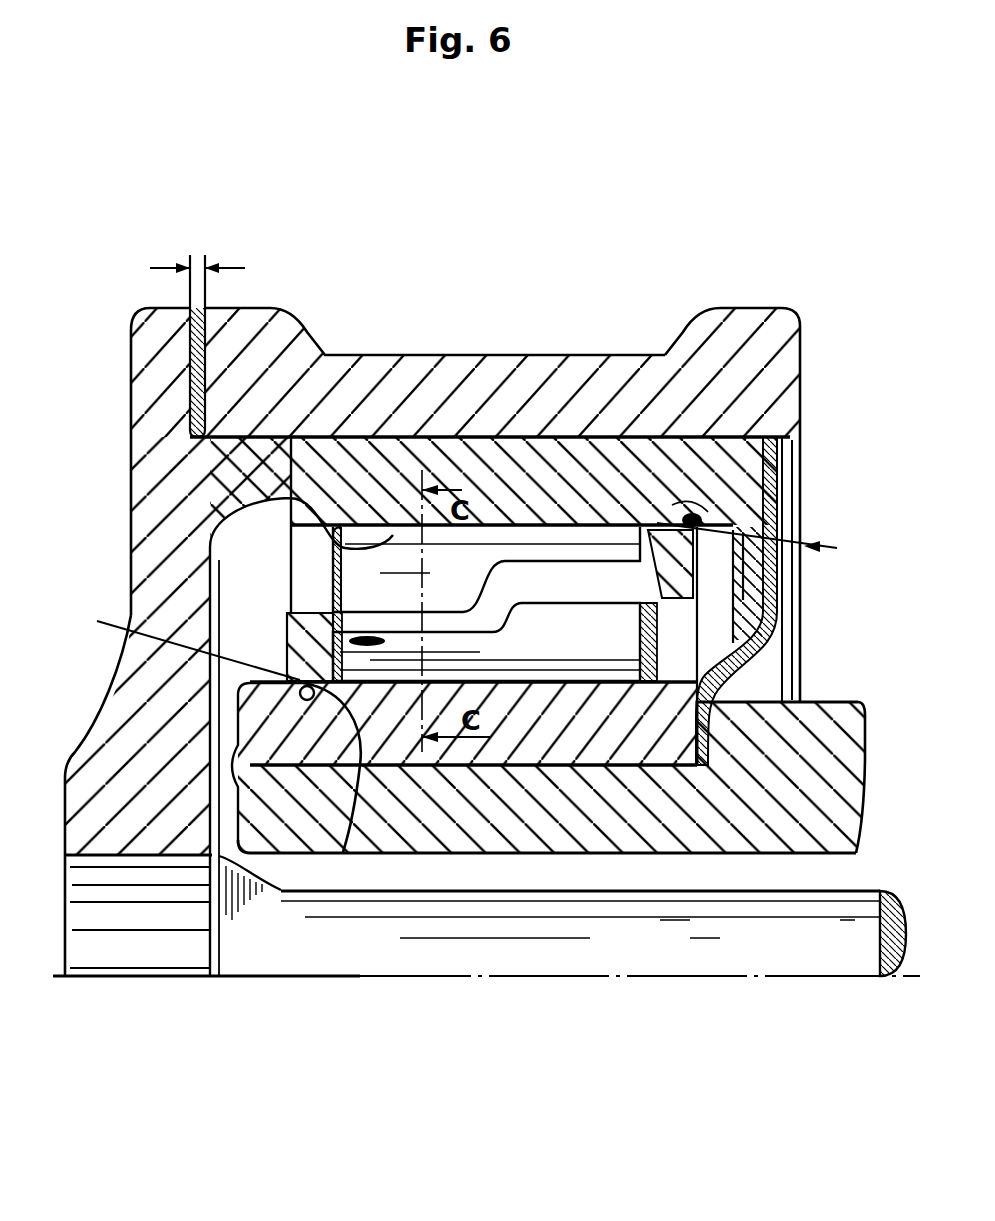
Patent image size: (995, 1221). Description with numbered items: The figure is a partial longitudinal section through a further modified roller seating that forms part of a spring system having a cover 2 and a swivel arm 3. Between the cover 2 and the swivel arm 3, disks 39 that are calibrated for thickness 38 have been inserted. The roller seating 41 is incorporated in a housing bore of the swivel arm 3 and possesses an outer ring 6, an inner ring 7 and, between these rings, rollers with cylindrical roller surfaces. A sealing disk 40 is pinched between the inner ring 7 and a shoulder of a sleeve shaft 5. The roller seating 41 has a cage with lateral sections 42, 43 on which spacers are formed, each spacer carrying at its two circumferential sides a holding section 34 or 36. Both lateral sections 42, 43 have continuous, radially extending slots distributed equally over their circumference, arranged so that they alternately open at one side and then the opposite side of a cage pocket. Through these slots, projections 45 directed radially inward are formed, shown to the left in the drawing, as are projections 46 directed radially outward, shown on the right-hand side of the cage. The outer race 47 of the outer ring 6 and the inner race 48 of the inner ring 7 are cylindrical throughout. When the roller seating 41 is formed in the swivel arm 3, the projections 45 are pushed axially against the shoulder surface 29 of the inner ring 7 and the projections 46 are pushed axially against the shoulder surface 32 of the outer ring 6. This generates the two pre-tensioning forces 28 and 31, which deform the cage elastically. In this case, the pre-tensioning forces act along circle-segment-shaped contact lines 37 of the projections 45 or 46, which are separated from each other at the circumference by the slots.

The cover 2 is at (133, 724).
The swivel arm 3 is at (748, 335).
The sleeve shaft 5 is at (830, 830).
The outer ring 6 is at (307, 386).
The inner ring 7 is at (595, 760).
The pre-tensioning force 28 is at (124, 626).
The shoulder surface of the inner ring 29 is at (405, 690).
The pre-tensioning force 31 is at (818, 546).
The shoulder surface of the outer ring 32 is at (690, 514).
The holding section 34 is at (447, 642).
The holding section 36 is at (524, 560).
The contact line 37 is at (606, 565).
The thickness 38 is at (198, 262).
The disk 39 is at (250, 302).
The sealing disk 40 is at (705, 690).
The roller seating 41 is at (366, 425).
The lateral section 42 is at (290, 628).
The lateral section 43 is at (700, 582).
The projection 45 is at (298, 688).
The projection 46 is at (785, 400).
The outer race 47 is at (128, 390).
The inner race 48 is at (520, 672).